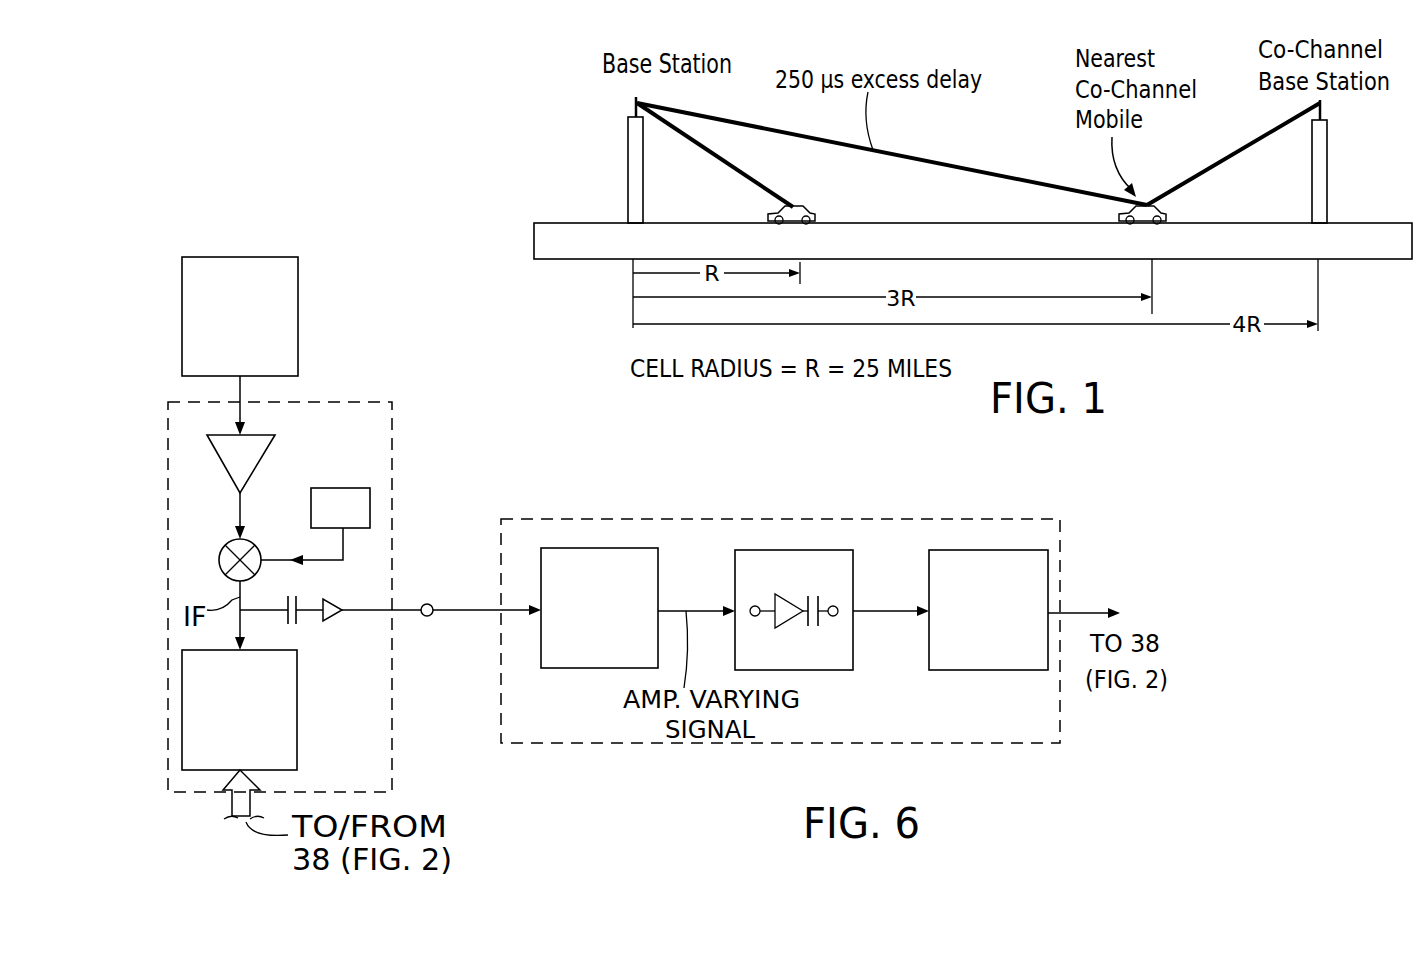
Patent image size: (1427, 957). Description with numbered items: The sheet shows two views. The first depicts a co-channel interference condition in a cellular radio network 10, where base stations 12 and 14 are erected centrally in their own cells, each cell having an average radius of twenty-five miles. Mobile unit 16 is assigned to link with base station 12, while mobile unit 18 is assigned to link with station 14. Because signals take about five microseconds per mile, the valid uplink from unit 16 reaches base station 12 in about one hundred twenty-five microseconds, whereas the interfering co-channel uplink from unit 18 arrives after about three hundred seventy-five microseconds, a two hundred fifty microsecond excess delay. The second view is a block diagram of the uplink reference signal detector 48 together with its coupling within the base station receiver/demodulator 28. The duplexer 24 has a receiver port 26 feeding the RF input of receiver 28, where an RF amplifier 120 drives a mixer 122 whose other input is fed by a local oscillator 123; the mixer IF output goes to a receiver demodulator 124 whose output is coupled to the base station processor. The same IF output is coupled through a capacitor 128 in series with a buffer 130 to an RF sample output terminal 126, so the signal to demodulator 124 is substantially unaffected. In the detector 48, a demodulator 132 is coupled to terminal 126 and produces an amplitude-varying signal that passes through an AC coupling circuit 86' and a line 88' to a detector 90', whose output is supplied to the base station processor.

In FIG. 1, the cellular radio network 10 is at (1014, 100).
In FIG. 1, the base station 12 is at (628, 165).
In FIG. 1, the base station 14 is at (1327, 170).
In FIG. 1, the mobile unit 16 is at (815, 213).
In FIG. 1, the mobile unit 18 is at (1166, 211).
In FIG. 6, the duplexer 24 is at (298, 329).
In FIG. 6, the receiver port 26 is at (243, 389).
In FIG. 6, the receiver/demodulator 28 is at (392, 410).
In FIG. 6, the reference signal or sync word detector 48 is at (787, 519).
In FIG. 6, the AC coupling circuit 86' is at (804, 634).
In FIG. 6, the amplifier output line 88' is at (891, 572).
In FIG. 6, the detector 90' is at (988, 635).
In FIG. 6, the RF amplifier 120 is at (265, 462).
In FIG. 6, the mixer 122 is at (225, 551).
In FIG. 6, the local oscillator 123 is at (370, 490).
In FIG. 6, the receiver demodulator 124 is at (297, 722).
In FIG. 6, the RF sample output terminal 126 is at (430, 604).
In FIG. 6, the capacitor 128 is at (299, 619).
In FIG. 6, the buffer 130 is at (348, 591).
In FIG. 6, the demodulator 132 is at (610, 668).